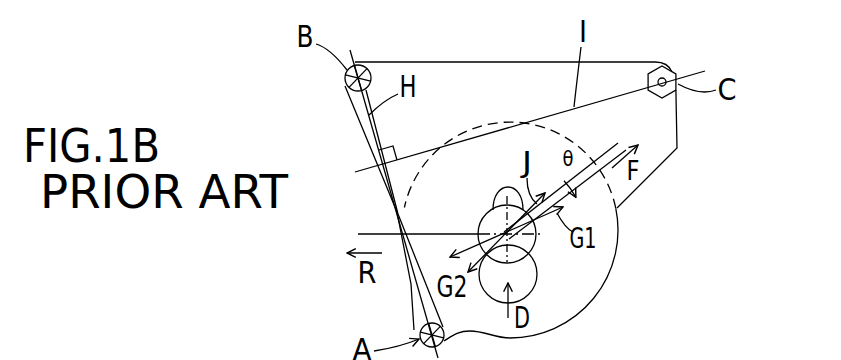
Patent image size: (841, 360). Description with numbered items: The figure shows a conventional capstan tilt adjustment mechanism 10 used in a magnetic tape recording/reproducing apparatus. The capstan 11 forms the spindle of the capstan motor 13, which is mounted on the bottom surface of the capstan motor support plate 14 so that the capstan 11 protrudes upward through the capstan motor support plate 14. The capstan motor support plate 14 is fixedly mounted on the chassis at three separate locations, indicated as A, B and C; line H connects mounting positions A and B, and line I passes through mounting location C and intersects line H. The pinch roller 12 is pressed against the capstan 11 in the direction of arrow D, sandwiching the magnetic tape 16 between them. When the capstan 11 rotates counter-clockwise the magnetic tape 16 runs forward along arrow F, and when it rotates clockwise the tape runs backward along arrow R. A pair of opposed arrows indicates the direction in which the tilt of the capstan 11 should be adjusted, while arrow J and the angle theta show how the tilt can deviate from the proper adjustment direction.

The capstan tilt adjustment mechanism 10 is at (720, 32).
The capstan 11 is at (491, 207).
The pinch roller 12 is at (534, 279).
The capstan motor 13 is at (534, 124).
The capstan motor support plate 14 is at (678, 148).
The magnetic tape 16 is at (628, 198).